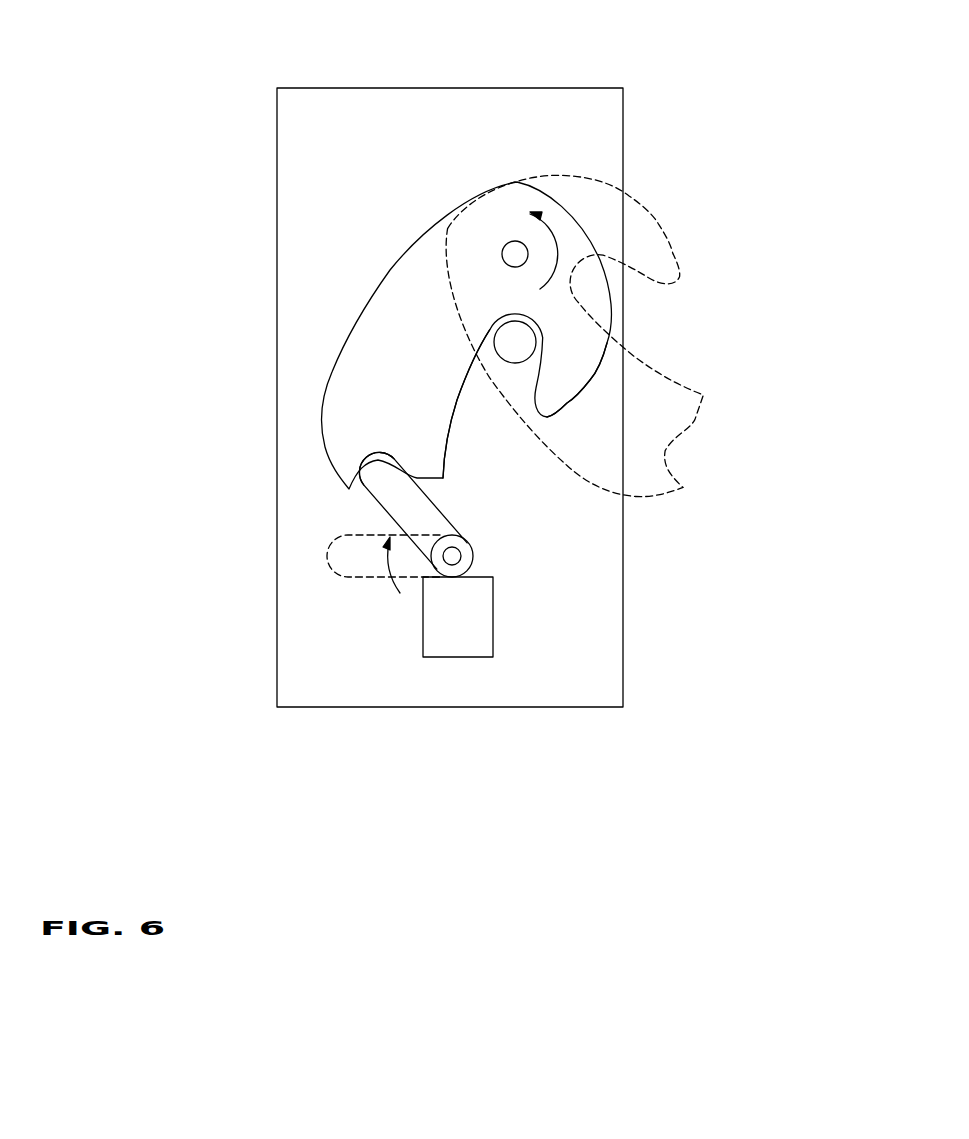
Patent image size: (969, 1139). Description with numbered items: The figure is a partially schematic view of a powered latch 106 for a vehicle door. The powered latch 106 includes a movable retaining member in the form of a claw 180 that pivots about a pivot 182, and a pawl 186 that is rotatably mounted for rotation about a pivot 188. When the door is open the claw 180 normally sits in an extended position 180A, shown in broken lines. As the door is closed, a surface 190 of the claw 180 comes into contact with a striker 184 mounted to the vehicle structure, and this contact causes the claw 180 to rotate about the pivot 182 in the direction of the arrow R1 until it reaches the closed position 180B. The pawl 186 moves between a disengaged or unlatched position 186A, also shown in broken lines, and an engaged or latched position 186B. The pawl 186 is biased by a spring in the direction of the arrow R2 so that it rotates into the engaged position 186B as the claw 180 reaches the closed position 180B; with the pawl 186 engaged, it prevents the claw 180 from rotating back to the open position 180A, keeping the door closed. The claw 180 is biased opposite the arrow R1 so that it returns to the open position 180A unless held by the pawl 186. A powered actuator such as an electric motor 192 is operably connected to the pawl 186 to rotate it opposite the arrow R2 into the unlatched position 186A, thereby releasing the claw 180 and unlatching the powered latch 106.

The powered latch 106 is at (456, 80).
The claw 180 is at (517, 178).
The extended position 180A is at (667, 232).
The closed position 180B is at (590, 380).
The pivot 182 is at (502, 247).
The striker 184 is at (510, 363).
The pawl 186 is at (377, 506).
The disengaged position 186A is at (323, 567).
The engaged position 186B is at (380, 487).
The pivot 188 is at (452, 556).
The surface 190 is at (457, 407).
The electric motor 192 is at (460, 648).
The arrow R1 is at (557, 238).
The arrow R2 is at (383, 567).